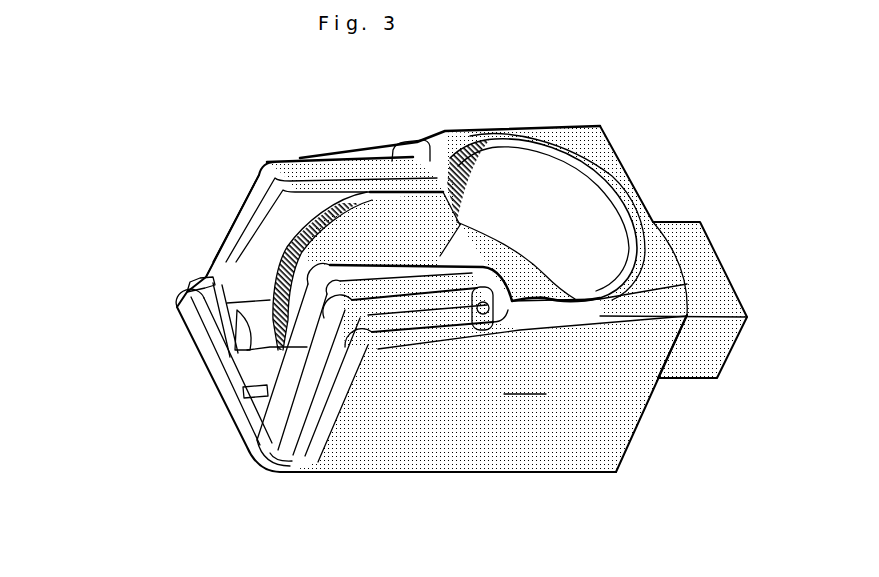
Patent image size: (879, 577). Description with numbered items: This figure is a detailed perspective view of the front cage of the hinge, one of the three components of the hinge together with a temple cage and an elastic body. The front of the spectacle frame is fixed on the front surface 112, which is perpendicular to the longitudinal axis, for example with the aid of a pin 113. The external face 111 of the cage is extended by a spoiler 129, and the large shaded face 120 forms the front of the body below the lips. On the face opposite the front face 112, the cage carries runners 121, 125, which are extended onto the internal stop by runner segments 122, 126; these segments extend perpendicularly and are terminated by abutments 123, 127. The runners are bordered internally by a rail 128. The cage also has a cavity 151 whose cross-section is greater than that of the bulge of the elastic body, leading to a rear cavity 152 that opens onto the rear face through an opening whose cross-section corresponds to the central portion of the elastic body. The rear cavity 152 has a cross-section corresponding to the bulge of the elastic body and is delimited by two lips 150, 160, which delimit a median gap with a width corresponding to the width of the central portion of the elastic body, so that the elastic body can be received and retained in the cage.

The external face 111 is at (432, 344).
The front surface 112 is at (701, 393).
The pin 113 is at (703, 269).
The front face 120 is at (491, 393).
The runner 121 is at (250, 380).
The runner segment 122 is at (408, 409).
The abutment 123 is at (456, 421).
The runner 125 is at (123, 323).
The runner segment 126 is at (321, 177).
The abutment 127 is at (428, 115).
The rail 128 is at (170, 236).
The spoiler 129 is at (171, 364).
The lip 150 is at (302, 193).
The cavity 151 is at (508, 192).
The rear cavity 152 is at (387, 216).
The lip 160 is at (315, 288).